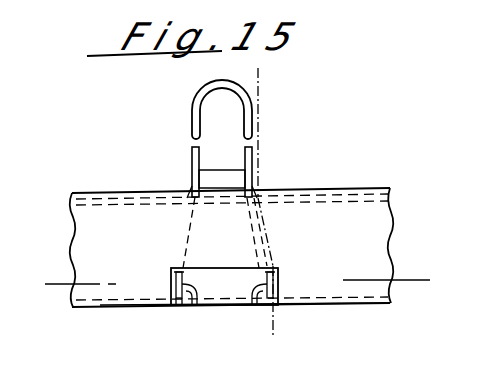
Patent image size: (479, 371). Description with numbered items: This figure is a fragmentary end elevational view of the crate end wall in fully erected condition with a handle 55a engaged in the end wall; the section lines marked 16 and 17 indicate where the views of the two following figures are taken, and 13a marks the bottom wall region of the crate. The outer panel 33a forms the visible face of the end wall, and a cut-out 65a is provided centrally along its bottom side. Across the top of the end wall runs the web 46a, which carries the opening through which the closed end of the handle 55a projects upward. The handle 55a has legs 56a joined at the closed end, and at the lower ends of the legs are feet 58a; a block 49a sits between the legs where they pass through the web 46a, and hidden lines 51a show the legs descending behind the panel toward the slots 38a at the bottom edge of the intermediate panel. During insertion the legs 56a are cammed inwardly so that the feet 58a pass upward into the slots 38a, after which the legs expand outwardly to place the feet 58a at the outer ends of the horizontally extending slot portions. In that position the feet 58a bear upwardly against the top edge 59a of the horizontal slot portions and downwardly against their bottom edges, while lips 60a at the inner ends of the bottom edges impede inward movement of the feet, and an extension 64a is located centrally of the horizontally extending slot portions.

The bottom wall 13a is at (380, 305).
The section line 16- 16 is at (249, 72).
The section line 17- 17 is at (48, 296).
The outer panel 33a is at (357, 240).
The slot 38a is at (185, 306).
The web 46a is at (376, 188).
The base block 49a is at (222, 179).
The hidden shank 51a is at (247, 240).
The handle 55a is at (222, 80).
The leg 56a is at (245, 153).
The handle foot 58a is at (171, 276).
The top edge 59a is at (194, 200).
The lip 60a is at (184, 306).
The extension 64a is at (250, 298).
The cut-out 65a is at (276, 283).